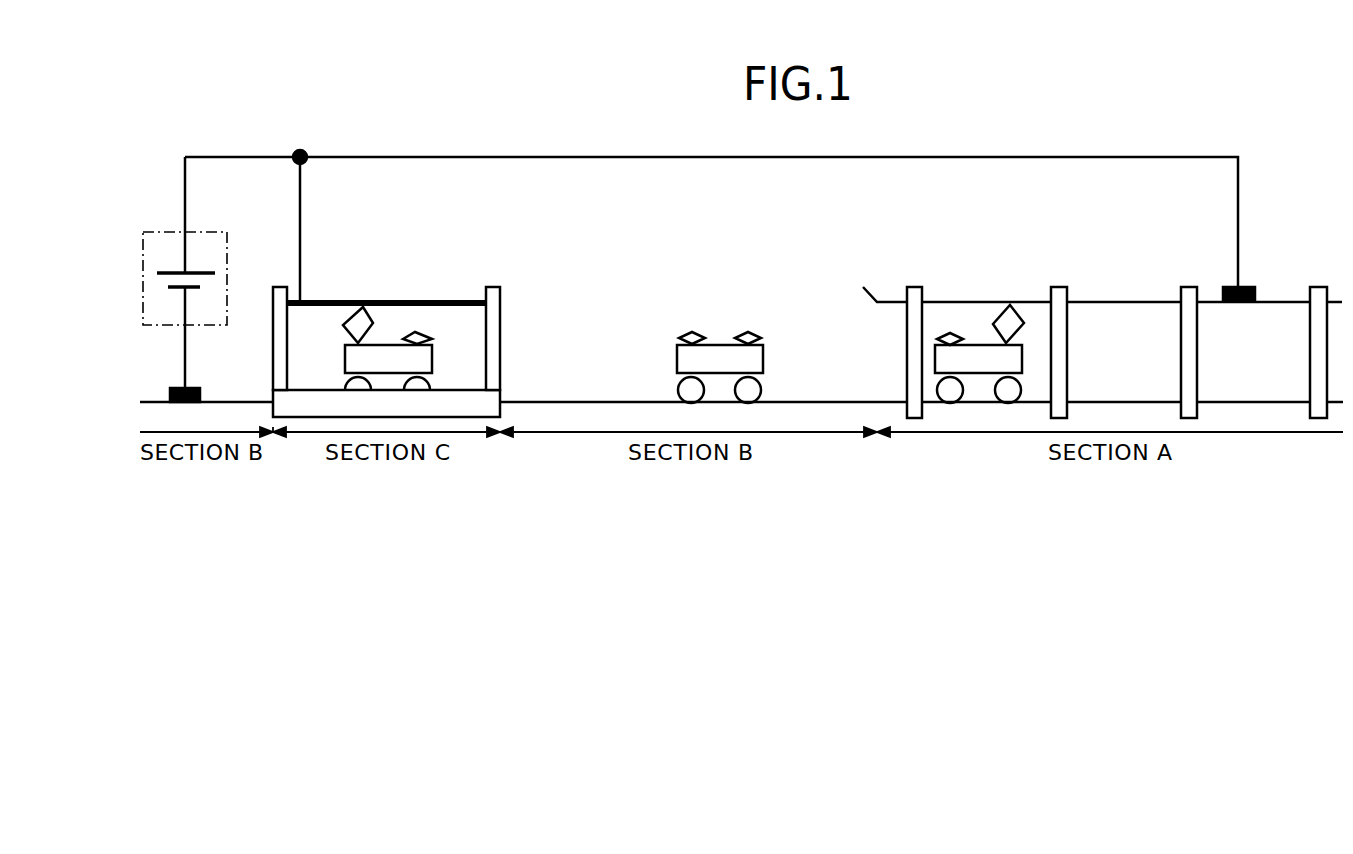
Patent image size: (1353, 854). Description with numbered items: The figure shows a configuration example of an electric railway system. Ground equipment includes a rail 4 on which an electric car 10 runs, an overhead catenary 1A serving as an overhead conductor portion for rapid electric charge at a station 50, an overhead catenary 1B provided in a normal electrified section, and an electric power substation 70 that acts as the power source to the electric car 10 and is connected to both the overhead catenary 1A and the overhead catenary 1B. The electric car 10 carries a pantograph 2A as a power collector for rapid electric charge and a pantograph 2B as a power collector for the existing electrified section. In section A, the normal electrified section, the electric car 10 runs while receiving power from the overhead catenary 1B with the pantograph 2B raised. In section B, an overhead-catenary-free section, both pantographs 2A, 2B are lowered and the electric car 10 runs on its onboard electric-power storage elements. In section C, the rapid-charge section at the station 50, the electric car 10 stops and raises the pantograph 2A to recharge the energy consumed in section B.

The electric power substation 70 is at (201, 232).
The electric car 10 is at (388, 345).
The overhead catenary 1A is at (470, 300).
The overhead catenary 1B is at (1107, 300).
The pantograph 2A is at (371, 305).
The pantograph 2B is at (423, 333).
The station 50 is at (503, 396).
The rail 4 is at (817, 400).